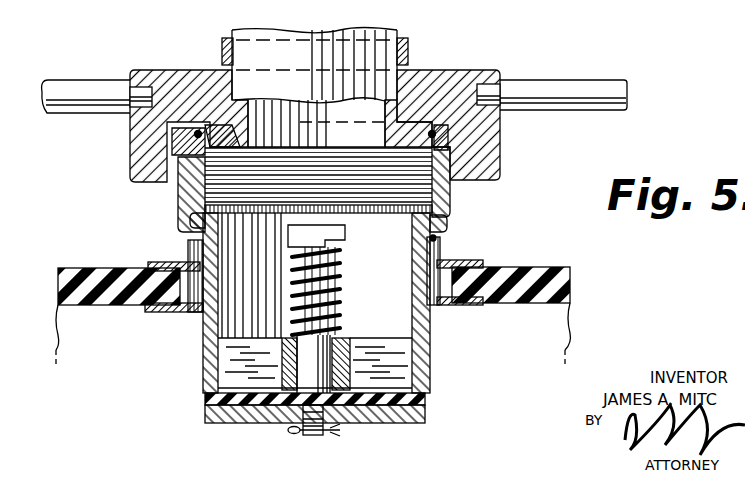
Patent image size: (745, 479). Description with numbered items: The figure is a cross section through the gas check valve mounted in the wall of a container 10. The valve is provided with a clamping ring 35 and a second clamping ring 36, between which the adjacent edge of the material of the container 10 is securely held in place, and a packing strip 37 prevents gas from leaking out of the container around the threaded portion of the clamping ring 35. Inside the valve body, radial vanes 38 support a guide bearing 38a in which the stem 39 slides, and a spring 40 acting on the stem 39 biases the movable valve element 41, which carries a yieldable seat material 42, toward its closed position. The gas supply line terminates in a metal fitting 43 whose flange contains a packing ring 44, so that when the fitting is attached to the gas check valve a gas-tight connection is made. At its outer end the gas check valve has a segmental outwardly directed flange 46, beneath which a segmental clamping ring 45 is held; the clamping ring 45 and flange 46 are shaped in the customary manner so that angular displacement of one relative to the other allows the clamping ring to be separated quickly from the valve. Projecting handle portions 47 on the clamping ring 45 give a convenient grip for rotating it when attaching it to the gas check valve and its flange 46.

The container 10 is at (532, 272).
The clamping ring 35 is at (447, 306).
The second clamping ring 36 is at (460, 262).
The packing strip 37 is at (196, 240).
The radial vanes 38 is at (393, 372).
The guide bearing 38a is at (282, 360).
The stem 39 is at (293, 405).
The spring 40 is at (328, 283).
The movable valve element 41 is at (416, 428).
The yieldable seat material 42 is at (423, 396).
The metal fitting 43 is at (370, 43).
The packing ring 44 is at (432, 150).
The segmental clamping ring 45 is at (470, 169).
The segmental outwardly directed flange 46 is at (436, 144).
The handle portions 47 is at (67, 88).